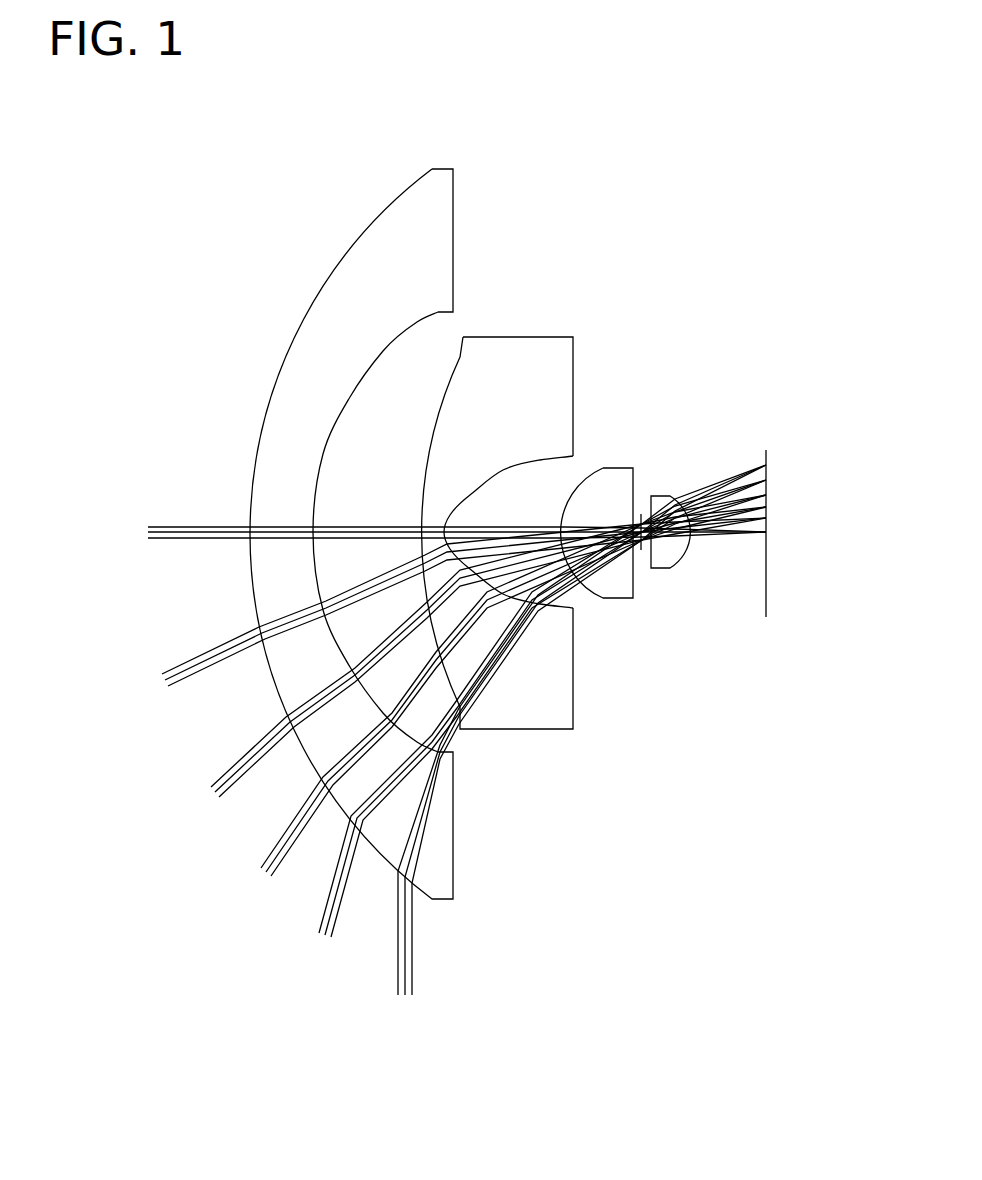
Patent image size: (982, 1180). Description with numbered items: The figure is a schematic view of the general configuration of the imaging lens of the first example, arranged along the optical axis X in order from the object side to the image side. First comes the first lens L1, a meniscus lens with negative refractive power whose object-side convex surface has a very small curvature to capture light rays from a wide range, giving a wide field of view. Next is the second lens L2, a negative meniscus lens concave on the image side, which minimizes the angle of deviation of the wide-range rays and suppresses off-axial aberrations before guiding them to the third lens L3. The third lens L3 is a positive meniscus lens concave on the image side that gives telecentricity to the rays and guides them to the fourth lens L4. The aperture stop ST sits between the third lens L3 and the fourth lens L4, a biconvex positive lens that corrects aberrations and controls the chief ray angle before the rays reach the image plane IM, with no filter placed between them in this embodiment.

The first lens L1 is at (441, 168).
The second lens L2 is at (517, 337).
The third lens L3 is at (610, 467).
The fourth lens L4 is at (662, 494).
The aperture stop ST is at (641, 550).
The image plane IM is at (767, 583).
The optical axis X is at (165, 530).